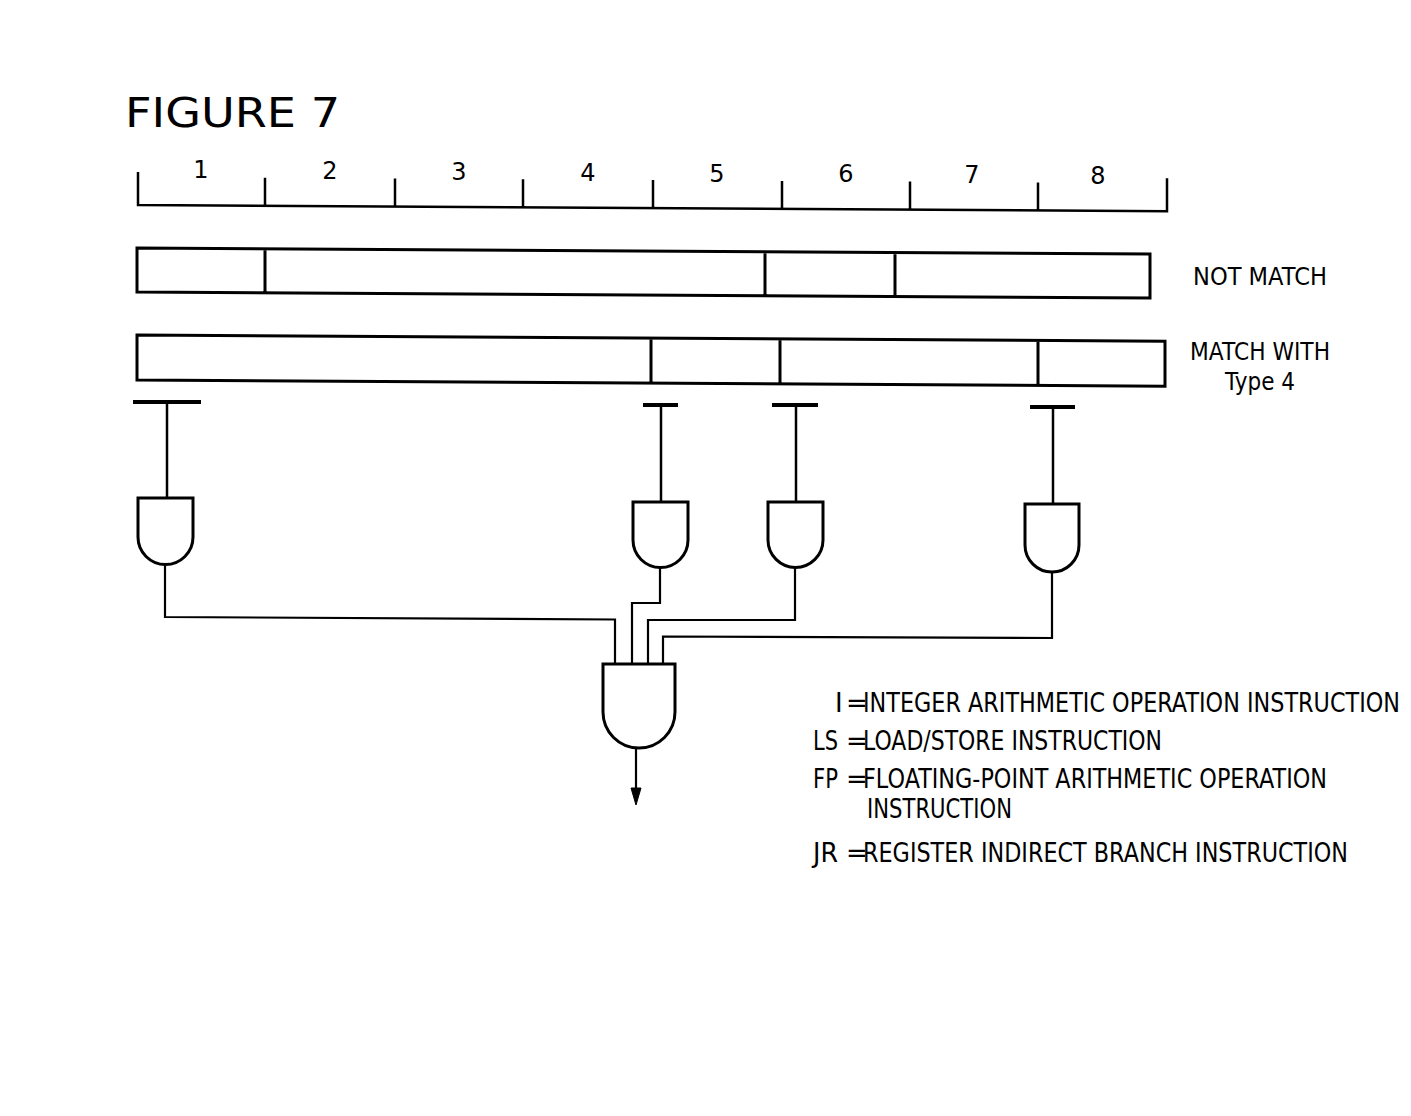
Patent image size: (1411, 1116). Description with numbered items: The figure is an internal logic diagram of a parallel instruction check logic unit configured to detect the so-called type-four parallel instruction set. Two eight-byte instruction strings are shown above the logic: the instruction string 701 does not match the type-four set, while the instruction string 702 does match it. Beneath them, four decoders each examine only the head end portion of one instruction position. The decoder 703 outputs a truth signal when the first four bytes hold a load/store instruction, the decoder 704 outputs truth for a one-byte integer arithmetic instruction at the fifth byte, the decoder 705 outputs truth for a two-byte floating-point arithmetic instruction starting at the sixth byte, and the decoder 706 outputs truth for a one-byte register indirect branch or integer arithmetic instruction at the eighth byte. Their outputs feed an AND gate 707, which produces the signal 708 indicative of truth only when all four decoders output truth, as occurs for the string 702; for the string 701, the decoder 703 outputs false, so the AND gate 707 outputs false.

The string of instructions 701 is at (137, 268).
The string of instructions 702 is at (137, 360).
The decoder 703 is at (193, 523).
The decoder 704 is at (633, 528).
The decoder 705 is at (823, 528).
The decoder 706 is at (1079, 530).
The AND gate 707 is at (600, 680).
The signal 708 is at (637, 778).